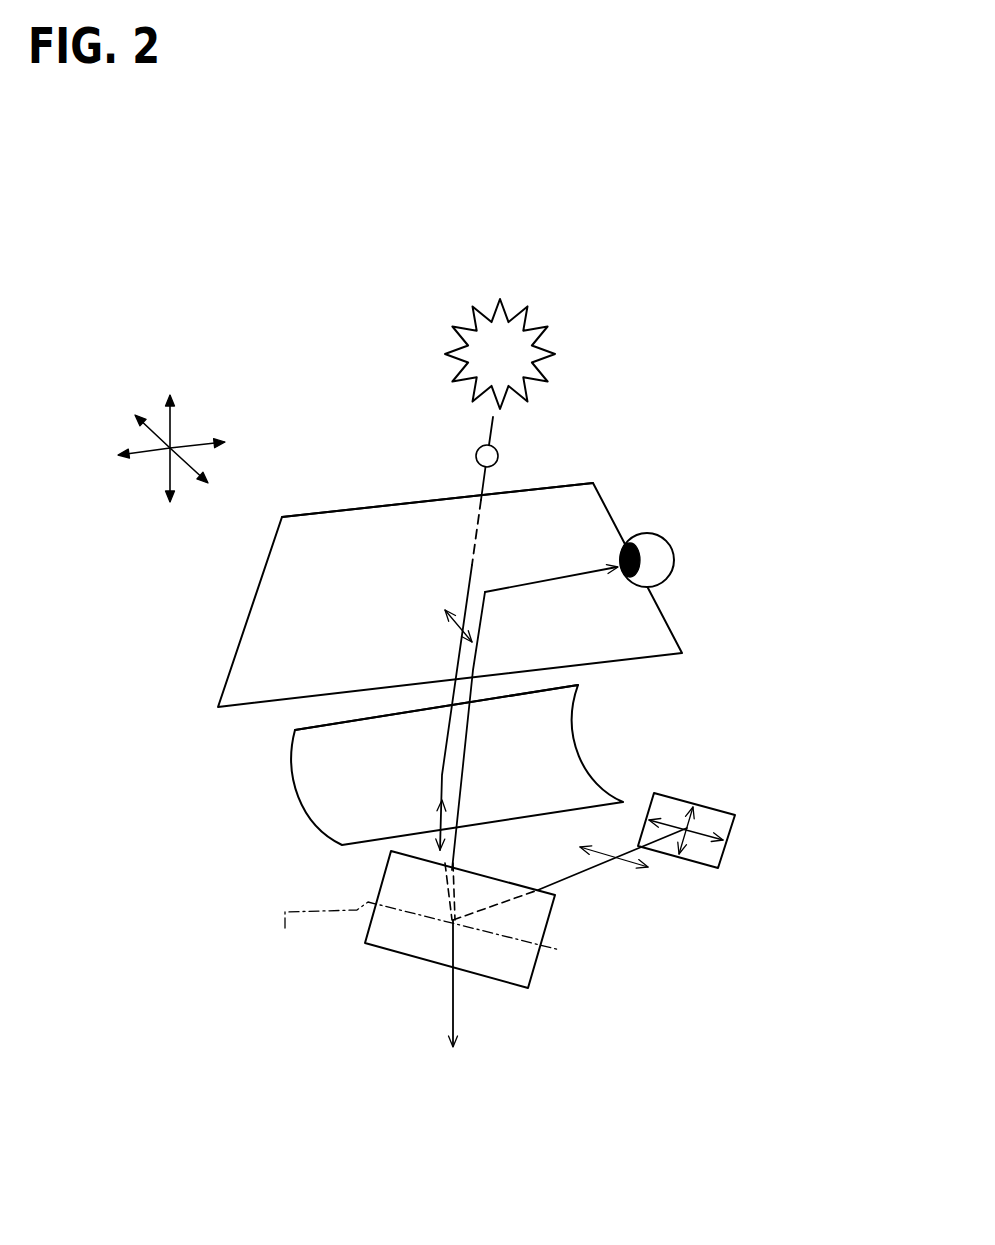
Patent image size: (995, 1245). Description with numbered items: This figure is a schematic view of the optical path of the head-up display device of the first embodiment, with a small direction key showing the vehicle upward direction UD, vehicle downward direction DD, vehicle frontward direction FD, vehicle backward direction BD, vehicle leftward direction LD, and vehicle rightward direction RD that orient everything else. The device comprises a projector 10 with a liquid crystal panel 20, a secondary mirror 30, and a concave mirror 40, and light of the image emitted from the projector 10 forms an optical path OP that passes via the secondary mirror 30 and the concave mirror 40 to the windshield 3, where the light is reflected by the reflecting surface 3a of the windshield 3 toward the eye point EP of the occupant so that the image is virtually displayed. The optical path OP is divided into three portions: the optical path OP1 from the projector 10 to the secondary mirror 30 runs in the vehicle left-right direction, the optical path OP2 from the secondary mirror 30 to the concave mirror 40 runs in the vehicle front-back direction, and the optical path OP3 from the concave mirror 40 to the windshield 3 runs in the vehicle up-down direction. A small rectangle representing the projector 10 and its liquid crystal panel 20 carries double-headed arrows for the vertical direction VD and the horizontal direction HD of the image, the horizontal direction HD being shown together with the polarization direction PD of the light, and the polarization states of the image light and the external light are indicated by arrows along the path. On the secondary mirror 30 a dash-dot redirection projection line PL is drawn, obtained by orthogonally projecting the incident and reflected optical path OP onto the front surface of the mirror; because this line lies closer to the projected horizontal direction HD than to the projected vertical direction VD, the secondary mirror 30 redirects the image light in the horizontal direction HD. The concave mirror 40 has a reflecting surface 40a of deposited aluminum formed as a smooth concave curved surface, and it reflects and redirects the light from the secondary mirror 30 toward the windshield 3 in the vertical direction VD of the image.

The windshield 3 is at (252, 598).
The reflecting surface of windshield 3a is at (322, 559).
The concave mirror 40 is at (297, 807).
The reflecting surface 40a is at (377, 730).
The secondary mirror 30 is at (538, 962).
The projector 10 is at (732, 839).
The liquid crystal panel 20 is at (732, 839).
The eye point EP is at (653, 534).
The redirection projection line PL is at (414, 932).
The optical path OP is at (579, 806).
The optical path from projector to secondary mirror OP1 is at (582, 872).
The optical path from secondary mirror to concave mirror OP2 is at (456, 848).
The optical path from concave mirror to windshield OP3 is at (477, 657).
The vertical direction of the image VD is at (694, 825).
The horizontal direction of the image HD is at (738, 831).
The polarization direction PD is at (714, 833).
The vehicle upward direction UD is at (170, 405).
The vehicle downward direction DD is at (170, 493).
The vehicle frontward direction FD is at (140, 416).
The vehicle backward direction BD is at (206, 478).
The vehicle leftward direction LD is at (128, 458).
The vehicle rightward direction RD is at (213, 443).